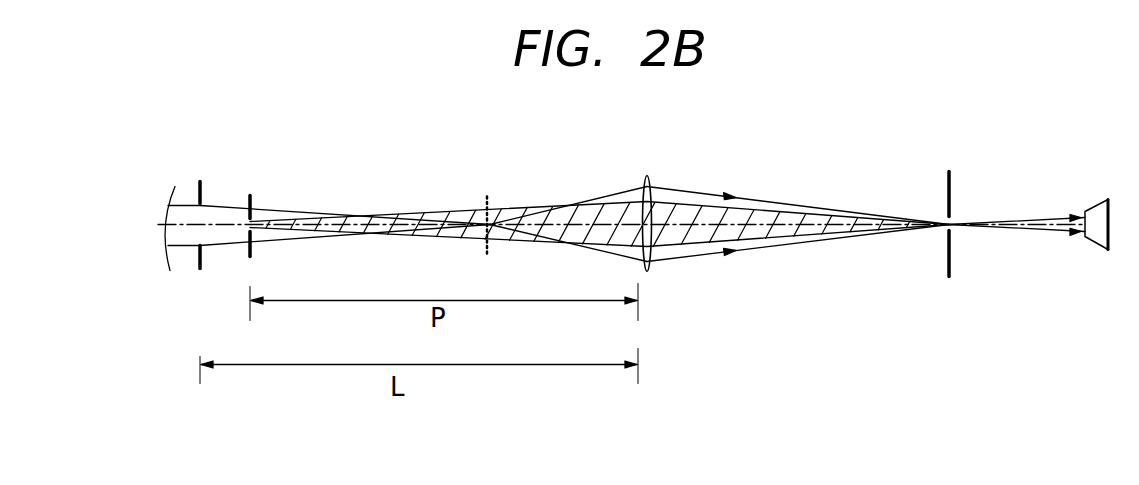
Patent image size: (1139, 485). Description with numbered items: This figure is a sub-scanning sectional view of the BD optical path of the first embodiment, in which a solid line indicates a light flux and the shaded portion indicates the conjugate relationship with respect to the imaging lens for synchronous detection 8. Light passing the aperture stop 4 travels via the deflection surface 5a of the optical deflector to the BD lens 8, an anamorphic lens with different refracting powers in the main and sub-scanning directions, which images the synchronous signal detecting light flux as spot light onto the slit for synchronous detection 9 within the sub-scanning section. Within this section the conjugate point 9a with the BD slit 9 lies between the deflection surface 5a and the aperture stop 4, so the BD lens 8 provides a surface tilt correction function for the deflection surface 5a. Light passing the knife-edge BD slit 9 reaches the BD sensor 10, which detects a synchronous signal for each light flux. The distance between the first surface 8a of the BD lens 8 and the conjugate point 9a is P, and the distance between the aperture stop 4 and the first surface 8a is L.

The aperture stop 4 is at (203, 184).
The conjugate point 9a is at (253, 198).
The deflection surface 5a is at (488, 198).
The first surface 8a is at (638, 192).
The imaging lens for synchronous detection 8 is at (653, 181).
The slit for synchronous detection 9 is at (952, 182).
The optical sensor as synchronous detection element 10 is at (1097, 199).